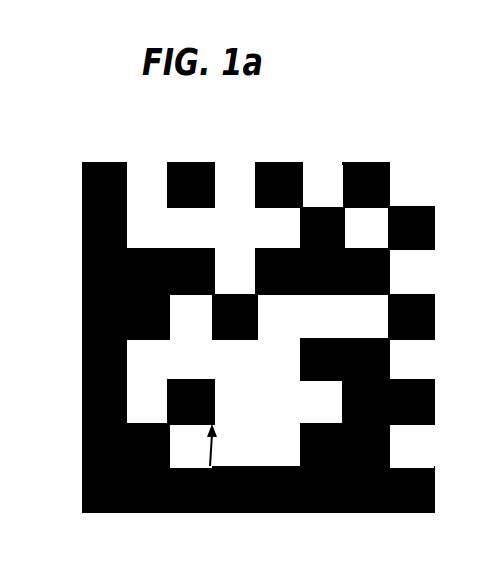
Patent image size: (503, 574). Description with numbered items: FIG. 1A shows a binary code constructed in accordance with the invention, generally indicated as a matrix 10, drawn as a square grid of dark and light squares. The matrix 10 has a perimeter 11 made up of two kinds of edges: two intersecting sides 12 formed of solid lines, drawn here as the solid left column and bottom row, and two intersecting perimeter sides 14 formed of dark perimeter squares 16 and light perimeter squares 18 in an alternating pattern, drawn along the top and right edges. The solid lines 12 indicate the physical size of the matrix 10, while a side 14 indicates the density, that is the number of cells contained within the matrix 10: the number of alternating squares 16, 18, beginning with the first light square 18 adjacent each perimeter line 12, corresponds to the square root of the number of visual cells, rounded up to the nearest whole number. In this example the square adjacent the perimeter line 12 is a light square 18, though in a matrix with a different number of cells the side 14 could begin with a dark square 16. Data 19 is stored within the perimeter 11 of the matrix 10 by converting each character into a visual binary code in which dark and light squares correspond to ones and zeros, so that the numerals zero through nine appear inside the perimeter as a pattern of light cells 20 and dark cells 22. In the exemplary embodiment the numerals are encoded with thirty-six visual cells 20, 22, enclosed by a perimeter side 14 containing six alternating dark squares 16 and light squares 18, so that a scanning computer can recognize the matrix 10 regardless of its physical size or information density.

The matrix 10 is at (454, 321).
The perimeter 11 is at (350, 530).
The sides formed of solid lines 12 is at (82, 287).
The perimeter sides 14 is at (305, 144).
The dark perimeter squares 16 is at (205, 147).
The light perimeter squares 18 is at (315, 175).
The data 19 is at (195, 513).
The light cells 20 is at (189, 326).
The dark cells 22 is at (322, 328).